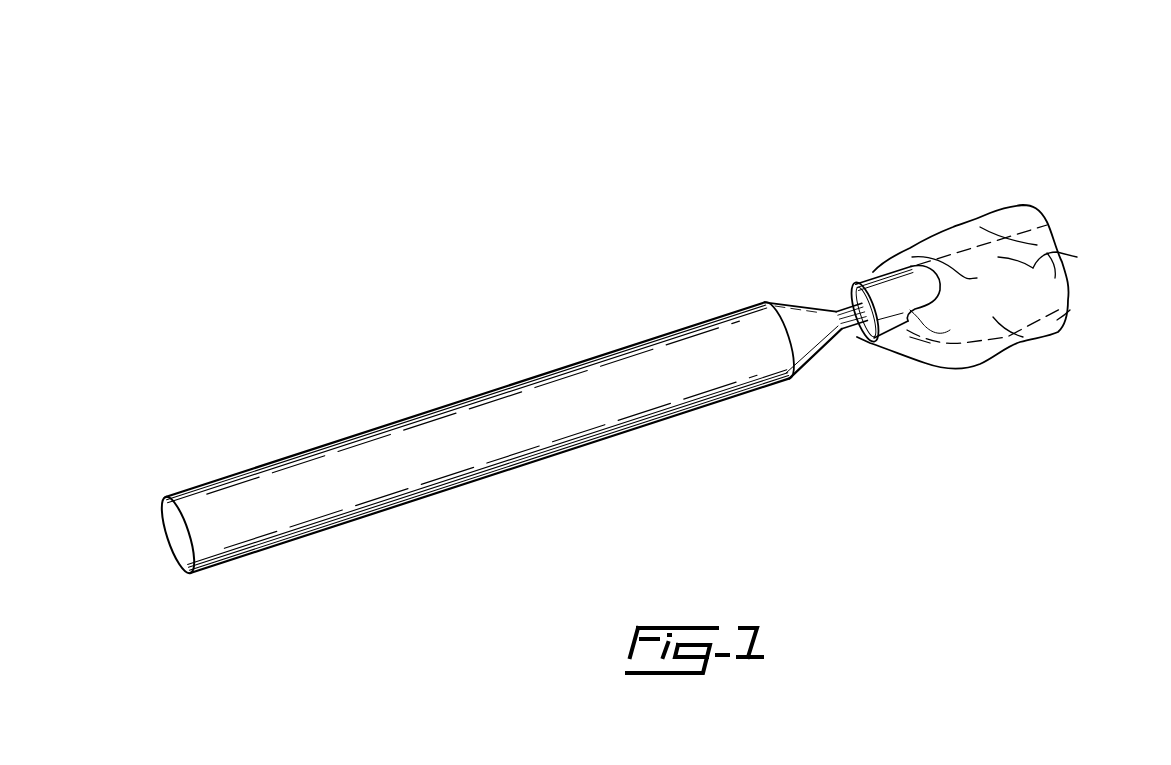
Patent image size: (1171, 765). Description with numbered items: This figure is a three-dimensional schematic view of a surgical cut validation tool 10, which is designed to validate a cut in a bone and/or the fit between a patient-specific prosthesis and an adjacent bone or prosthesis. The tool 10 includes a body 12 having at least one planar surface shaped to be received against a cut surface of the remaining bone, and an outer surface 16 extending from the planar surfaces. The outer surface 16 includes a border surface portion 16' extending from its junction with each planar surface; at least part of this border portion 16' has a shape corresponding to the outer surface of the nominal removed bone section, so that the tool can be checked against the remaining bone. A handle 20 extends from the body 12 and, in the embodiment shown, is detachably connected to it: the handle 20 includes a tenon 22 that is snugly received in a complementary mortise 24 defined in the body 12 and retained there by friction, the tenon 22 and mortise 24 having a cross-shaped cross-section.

The surgical cut validation tool 10 is at (1043, 138).
The body 12 is at (961, 212).
The outer surface 16 is at (1021, 285).
The border surface portion 16' is at (1035, 247).
The handle 20 is at (680, 402).
The tenon 22 is at (840, 307).
The mortise 24 is at (841, 303).